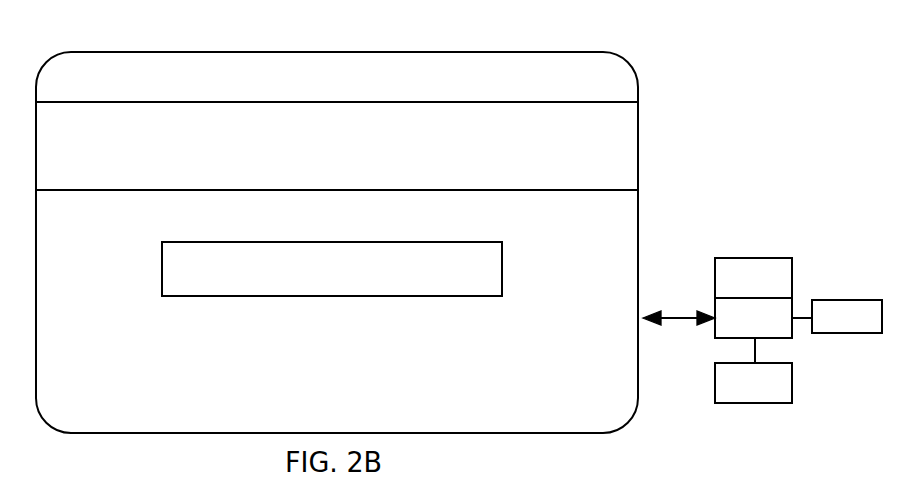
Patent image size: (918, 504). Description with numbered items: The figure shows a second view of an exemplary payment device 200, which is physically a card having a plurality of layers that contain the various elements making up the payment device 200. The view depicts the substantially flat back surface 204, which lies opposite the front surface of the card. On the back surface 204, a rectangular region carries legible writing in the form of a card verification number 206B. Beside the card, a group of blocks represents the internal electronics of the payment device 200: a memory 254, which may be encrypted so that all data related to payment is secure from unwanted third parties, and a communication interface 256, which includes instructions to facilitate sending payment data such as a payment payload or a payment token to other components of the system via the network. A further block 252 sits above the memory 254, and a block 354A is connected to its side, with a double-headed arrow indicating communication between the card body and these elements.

The payment device 200 is at (148, 57).
The back surface 204 is at (618, 230).
The card verification number 206B is at (470, 245).
The communication interface 252 is at (753, 278).
The memory 254 is at (727, 330).
The communication interface 256 is at (753, 383).
The sensor 354A is at (847, 316).